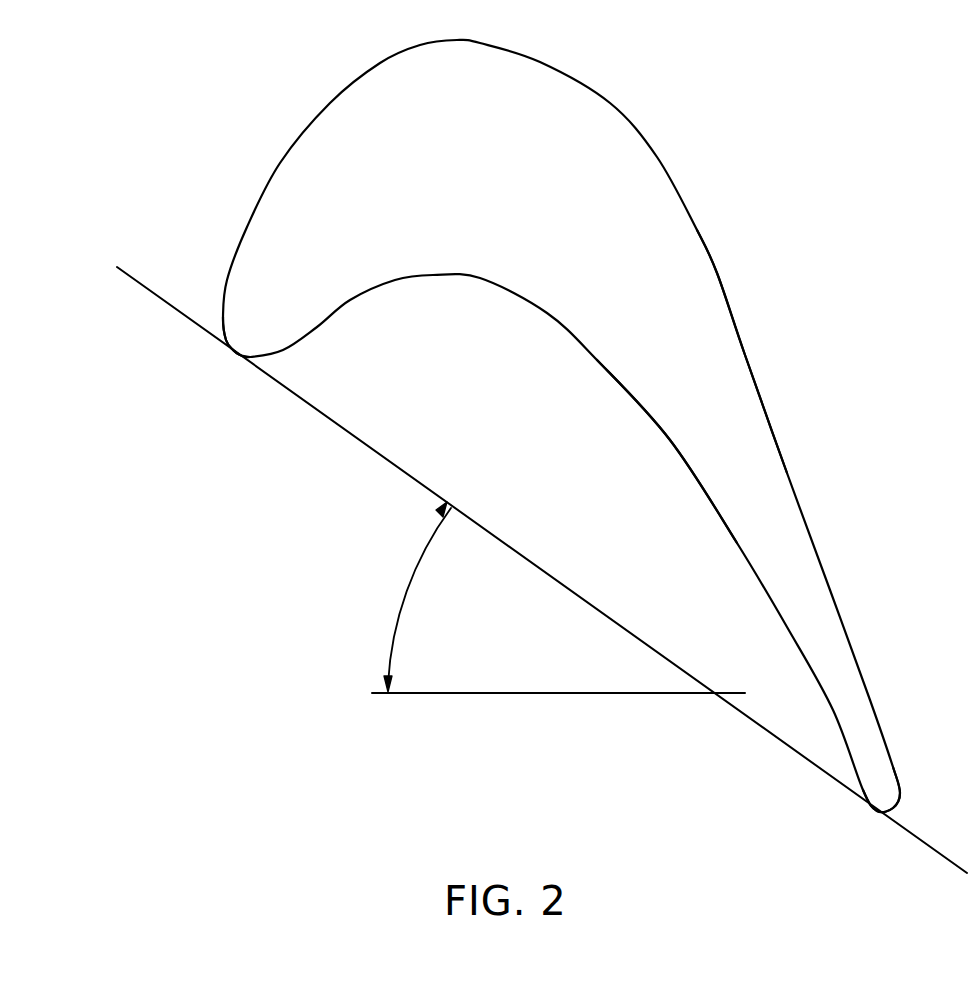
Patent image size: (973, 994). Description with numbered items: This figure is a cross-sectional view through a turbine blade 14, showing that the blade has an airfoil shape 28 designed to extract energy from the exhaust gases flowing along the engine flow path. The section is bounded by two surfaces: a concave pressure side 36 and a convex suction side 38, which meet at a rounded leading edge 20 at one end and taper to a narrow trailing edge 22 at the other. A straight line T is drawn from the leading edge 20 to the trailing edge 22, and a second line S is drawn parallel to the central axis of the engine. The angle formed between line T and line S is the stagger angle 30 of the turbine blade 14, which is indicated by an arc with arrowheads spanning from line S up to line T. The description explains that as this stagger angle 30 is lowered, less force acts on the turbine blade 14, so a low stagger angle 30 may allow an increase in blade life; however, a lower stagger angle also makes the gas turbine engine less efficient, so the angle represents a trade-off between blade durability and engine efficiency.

The turbine blade 14 is at (474, 180).
The turbine blade leading edge 20 is at (233, 351).
The turbine blade trailing edge 22 is at (877, 812).
The airfoil shape 28 is at (713, 173).
The stagger angle 30 is at (402, 590).
The pressure side 36 is at (668, 440).
The suction side 38 is at (718, 271).
The line T is at (363, 440).
The line S is at (460, 692).